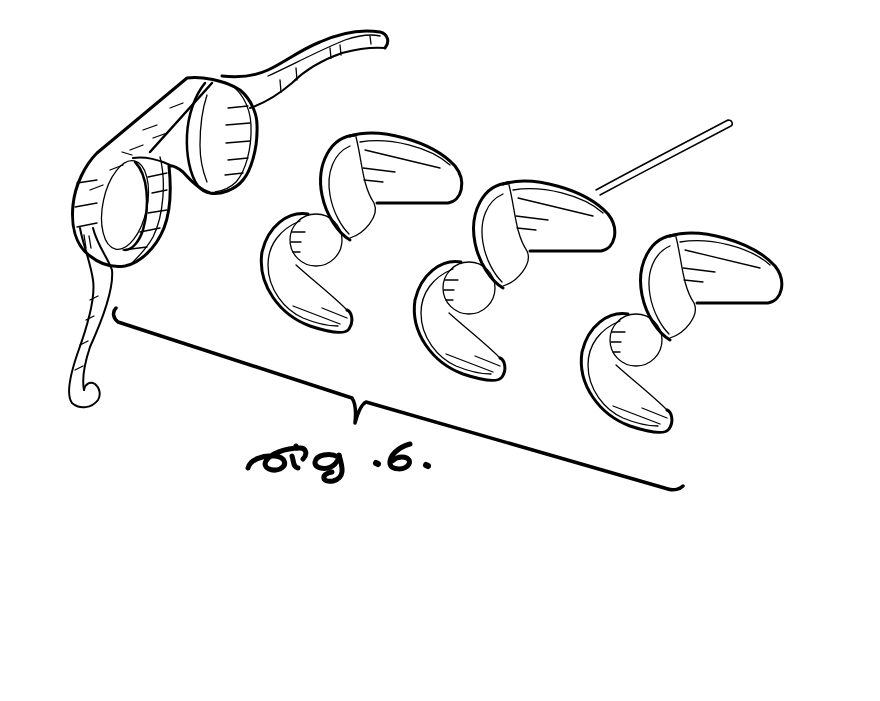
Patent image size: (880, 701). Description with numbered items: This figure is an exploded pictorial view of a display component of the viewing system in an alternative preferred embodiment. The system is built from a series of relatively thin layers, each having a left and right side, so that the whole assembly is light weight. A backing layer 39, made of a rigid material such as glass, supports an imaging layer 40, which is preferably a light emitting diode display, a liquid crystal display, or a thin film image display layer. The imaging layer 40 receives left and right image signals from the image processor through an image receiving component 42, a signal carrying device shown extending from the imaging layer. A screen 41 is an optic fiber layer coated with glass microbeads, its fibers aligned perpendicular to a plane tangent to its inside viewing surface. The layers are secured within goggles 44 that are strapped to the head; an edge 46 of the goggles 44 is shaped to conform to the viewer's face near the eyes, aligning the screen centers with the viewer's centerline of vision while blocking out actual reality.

The goggles 44 is at (207, 78).
The edge of the goggles 46 is at (255, 131).
The backing layer 39 is at (381, 131).
The imaging layer 40 is at (531, 181).
The screen 41 is at (727, 235).
The image receiving component 42 is at (679, 147).